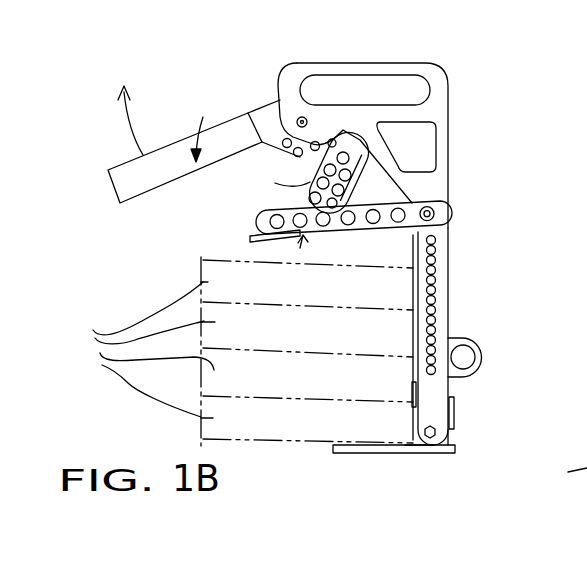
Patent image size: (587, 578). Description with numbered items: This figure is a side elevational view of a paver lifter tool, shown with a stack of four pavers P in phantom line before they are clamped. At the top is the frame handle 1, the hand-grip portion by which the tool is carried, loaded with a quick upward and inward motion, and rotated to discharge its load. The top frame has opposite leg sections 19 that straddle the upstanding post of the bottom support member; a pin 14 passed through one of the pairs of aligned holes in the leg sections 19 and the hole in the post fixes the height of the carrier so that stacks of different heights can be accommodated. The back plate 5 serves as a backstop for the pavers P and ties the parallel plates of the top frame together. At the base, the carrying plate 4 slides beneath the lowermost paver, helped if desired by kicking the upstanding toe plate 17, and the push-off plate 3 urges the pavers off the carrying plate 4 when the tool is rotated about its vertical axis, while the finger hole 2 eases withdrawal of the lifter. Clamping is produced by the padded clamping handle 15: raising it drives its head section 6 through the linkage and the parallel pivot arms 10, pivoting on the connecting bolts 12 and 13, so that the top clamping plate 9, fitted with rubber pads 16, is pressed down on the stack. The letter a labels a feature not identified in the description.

The handle 1 is at (371, 71).
The ring 2 is at (481, 347).
The base bracket 3 is at (410, 445).
The base plate 4 is at (348, 452).
The adjustment holes 5 is at (435, 252).
The lever connector 6 is at (259, 120).
The stop 9 is at (318, 238).
The link arm 10 is at (446, 200).
The slot / pivot holes 12 is at (306, 121).
The pivot 13 is at (434, 213).
The upper hole 14 is at (434, 240).
The lever 15 is at (185, 142).
The plate 16 is at (286, 241).
The vertical bar 17 is at (456, 418).
The frame 19 is at (448, 158).
The label a is at (283, 183).
The load direction P is at (60, 343).